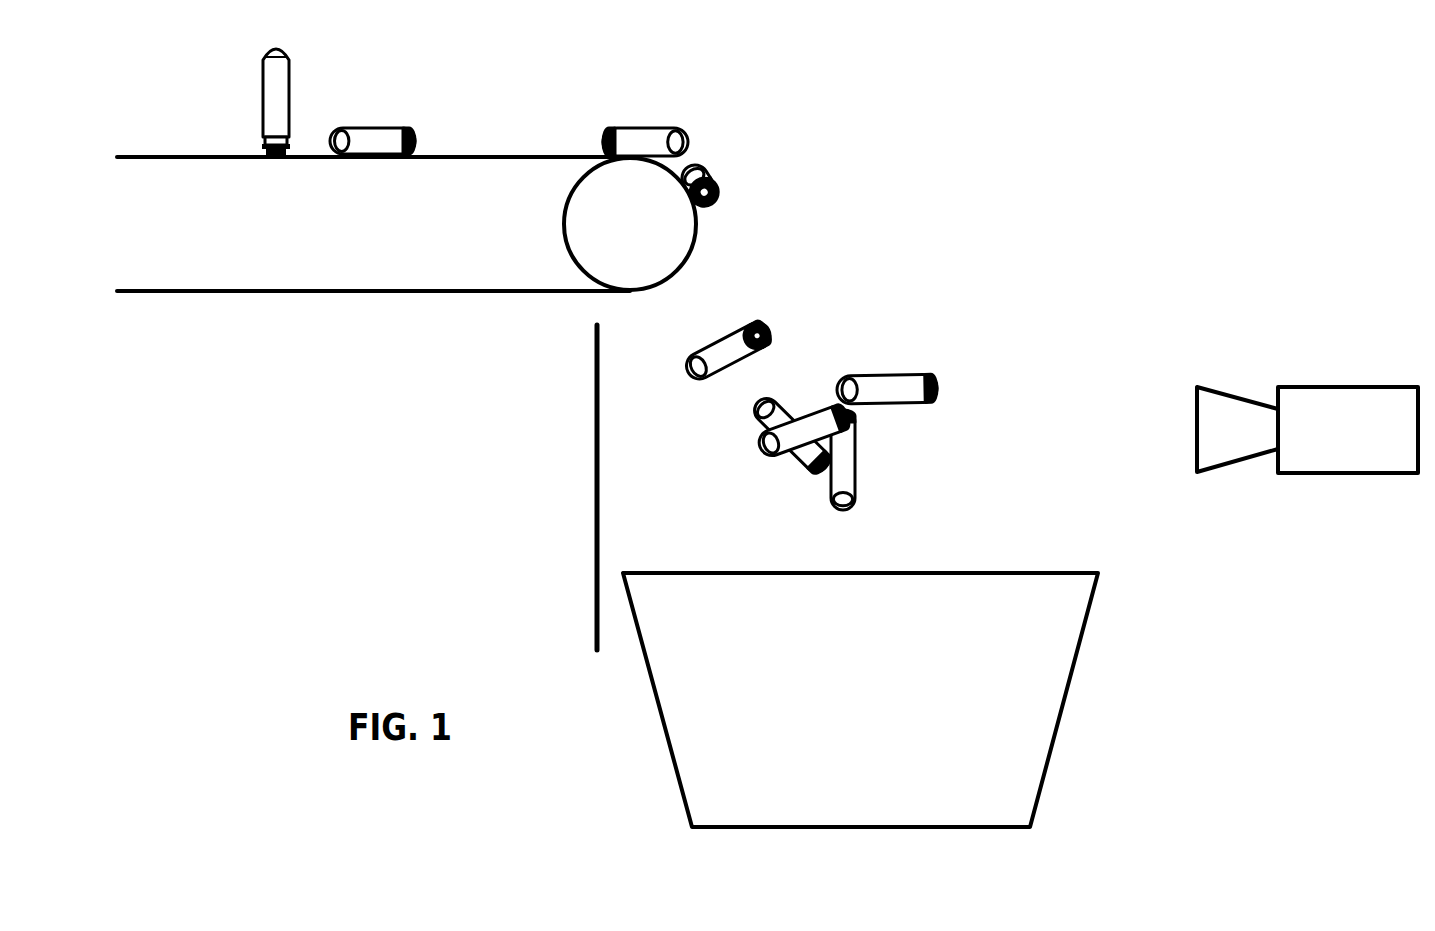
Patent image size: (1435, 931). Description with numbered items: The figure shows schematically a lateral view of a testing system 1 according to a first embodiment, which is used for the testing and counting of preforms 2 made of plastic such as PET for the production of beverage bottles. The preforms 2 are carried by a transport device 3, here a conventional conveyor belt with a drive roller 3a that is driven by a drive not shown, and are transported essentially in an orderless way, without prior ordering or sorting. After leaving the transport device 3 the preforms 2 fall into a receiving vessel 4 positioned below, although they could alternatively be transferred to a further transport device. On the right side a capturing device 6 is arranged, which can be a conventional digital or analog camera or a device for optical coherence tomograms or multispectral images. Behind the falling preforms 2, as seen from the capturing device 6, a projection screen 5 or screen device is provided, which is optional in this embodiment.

The testing system 1 is at (903, 232).
The preforms 2 is at (280, 88).
The transport device 3 is at (352, 291).
The drive roller 3a is at (622, 232).
The receiving vessel 4 is at (1038, 689).
The projection screen 5 is at (596, 470).
The capturing device 6 is at (1329, 405).